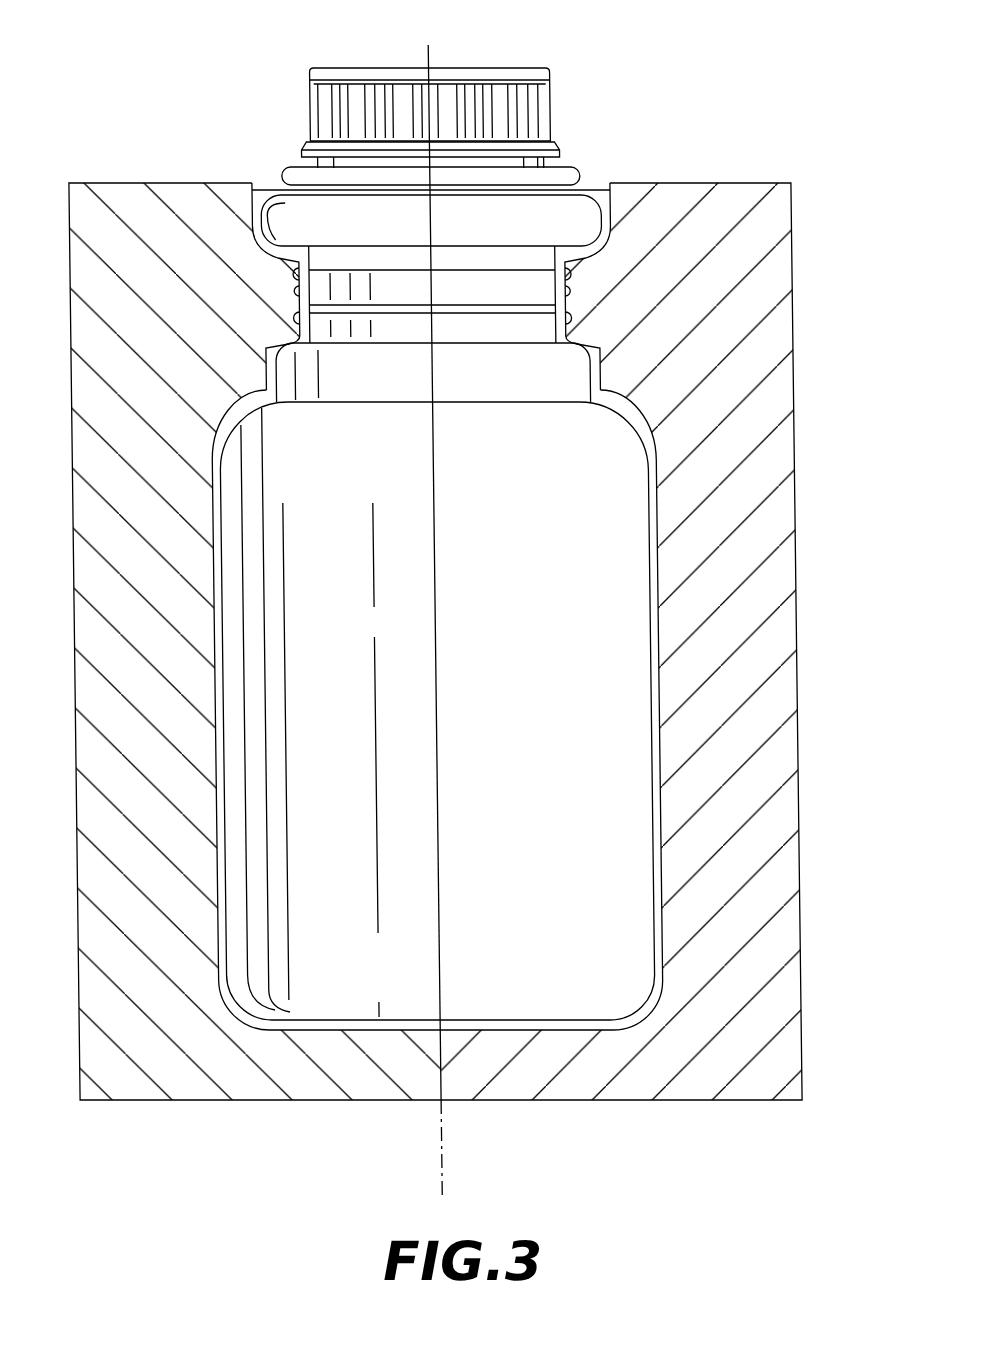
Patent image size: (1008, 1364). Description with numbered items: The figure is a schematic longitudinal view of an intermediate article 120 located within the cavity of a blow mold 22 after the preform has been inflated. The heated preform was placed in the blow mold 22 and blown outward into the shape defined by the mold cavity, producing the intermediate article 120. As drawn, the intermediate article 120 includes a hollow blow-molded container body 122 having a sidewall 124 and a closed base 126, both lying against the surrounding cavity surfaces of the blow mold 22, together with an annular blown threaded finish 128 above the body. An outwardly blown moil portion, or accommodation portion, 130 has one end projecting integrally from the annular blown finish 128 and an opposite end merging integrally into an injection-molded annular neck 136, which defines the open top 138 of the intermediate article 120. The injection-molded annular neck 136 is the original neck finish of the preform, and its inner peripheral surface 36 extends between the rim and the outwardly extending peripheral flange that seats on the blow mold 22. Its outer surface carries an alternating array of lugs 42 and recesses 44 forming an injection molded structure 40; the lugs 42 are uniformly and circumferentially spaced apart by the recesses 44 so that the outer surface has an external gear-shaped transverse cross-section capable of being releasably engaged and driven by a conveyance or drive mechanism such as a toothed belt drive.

The blow mold 22 is at (783, 512).
The inner peripheral surface 36 is at (559, 100).
The injection molded structure 40 is at (300, 122).
The lug 42 is at (406, 107).
The recess 44 is at (346, 113).
The intermediate article 120 is at (653, 782).
The blow-molded container body 122 is at (662, 697).
The sidewall 124 is at (660, 808).
The closed base 126 is at (518, 1026).
The annular blown threaded finish 128 is at (622, 296).
The moil portion 130 is at (261, 237).
The injection-molded annular neck 136 is at (556, 72).
The open top 138 is at (489, 68).